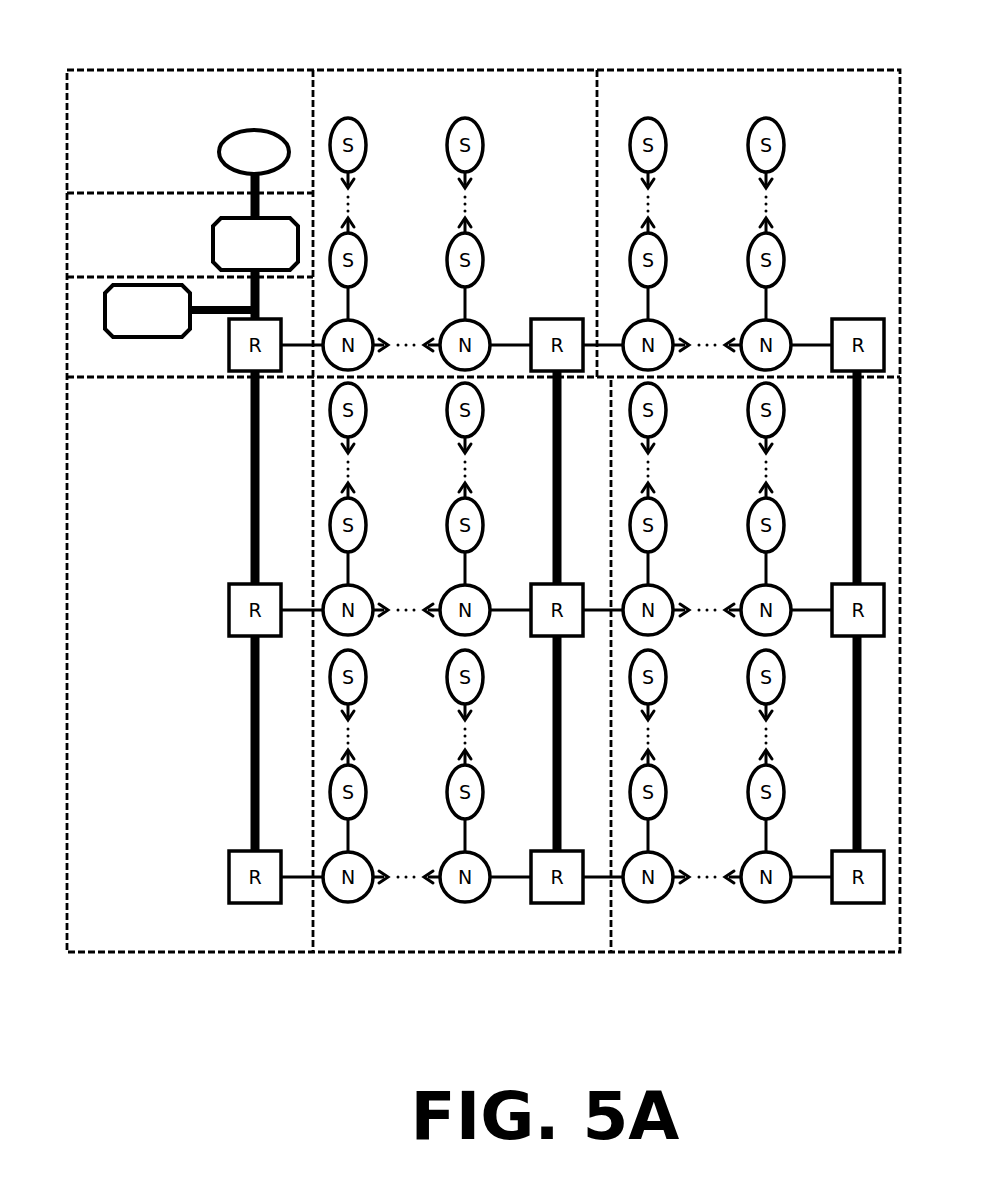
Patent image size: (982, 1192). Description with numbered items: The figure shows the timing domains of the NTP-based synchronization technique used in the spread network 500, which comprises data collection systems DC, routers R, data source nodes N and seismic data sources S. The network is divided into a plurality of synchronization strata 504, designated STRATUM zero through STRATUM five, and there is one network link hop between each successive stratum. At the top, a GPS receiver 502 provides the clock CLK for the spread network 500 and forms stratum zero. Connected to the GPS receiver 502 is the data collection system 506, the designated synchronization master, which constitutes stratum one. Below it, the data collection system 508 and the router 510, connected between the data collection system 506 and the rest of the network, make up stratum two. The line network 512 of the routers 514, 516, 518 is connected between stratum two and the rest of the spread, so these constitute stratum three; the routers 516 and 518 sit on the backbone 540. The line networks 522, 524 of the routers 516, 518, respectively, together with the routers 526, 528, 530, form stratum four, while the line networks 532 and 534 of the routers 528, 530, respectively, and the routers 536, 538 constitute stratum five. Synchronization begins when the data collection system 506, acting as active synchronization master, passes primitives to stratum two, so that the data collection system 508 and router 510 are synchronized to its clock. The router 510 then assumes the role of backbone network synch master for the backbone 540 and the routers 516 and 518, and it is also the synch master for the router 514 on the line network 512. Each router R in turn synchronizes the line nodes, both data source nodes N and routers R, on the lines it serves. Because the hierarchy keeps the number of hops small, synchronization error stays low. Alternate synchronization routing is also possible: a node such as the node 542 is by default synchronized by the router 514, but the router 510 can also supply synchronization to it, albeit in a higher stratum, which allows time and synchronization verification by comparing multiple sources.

The spread network 500 is at (208, 1041).
The GPS receiver 502 is at (253, 128).
The synchronization strata 504 is at (207, 68).
The data collection system 506 is at (213, 222).
The data collection system 508 is at (100, 307).
The router 510 is at (227, 379).
The line network 512 is at (497, 177).
The router 514 is at (531, 320).
The router 516 is at (228, 585).
The router 518 is at (228, 850).
The line network 522 is at (488, 437).
The line network 524 is at (487, 710).
The router 526 is at (833, 320).
The router 528 is at (531, 585).
The router 530 is at (808, 168).
The line network 532 is at (789, 442).
The line network 534 is at (784, 712).
The router 536 is at (833, 585).
The router 538 is at (833, 851).
The backbone 540 is at (248, 517).
The node 542 is at (666, 327).